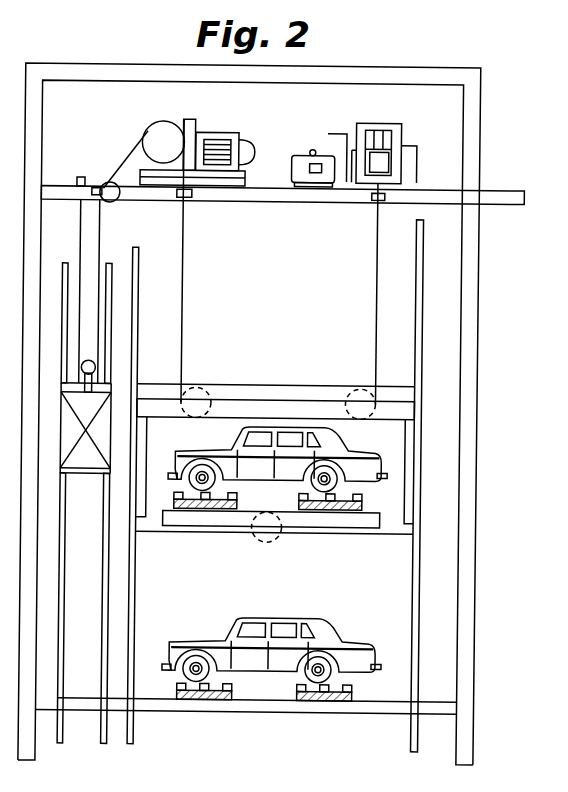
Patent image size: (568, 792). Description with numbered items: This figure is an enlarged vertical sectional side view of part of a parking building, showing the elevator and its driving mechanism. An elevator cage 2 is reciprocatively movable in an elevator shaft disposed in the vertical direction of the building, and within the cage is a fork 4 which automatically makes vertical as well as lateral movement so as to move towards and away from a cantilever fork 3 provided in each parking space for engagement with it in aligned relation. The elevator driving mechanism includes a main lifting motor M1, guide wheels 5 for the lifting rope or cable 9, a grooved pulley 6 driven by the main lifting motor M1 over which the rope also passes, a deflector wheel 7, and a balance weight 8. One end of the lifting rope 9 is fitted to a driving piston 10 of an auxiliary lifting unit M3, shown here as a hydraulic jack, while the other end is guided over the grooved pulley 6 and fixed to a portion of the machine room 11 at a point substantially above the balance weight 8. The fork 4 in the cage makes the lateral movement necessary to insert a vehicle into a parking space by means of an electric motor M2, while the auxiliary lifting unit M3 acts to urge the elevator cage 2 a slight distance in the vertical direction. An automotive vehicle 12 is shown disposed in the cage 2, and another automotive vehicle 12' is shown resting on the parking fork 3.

The elevator cage 2 is at (281, 394).
The cantilever fork 3 is at (352, 700).
The fork 4 is at (362, 506).
The guide wheels 5 is at (197, 407).
The grooved pulley 6 is at (153, 152).
The deflector wheel 7 is at (110, 187).
The balance weight 8 is at (68, 415).
The lifting rope 9 is at (183, 238).
The driving piston 10 is at (416, 140).
The machine room 11 is at (109, 88).
The automotive vehicle 12 is at (278, 457).
The automotive vehicle 12' is at (272, 641).
The main lifting motor M1 is at (233, 140).
The electric motor M2 is at (272, 538).
The auxiliary lifting unit M3 is at (299, 156).